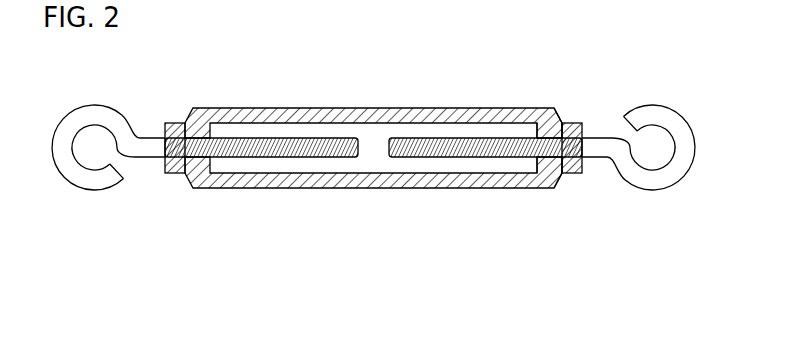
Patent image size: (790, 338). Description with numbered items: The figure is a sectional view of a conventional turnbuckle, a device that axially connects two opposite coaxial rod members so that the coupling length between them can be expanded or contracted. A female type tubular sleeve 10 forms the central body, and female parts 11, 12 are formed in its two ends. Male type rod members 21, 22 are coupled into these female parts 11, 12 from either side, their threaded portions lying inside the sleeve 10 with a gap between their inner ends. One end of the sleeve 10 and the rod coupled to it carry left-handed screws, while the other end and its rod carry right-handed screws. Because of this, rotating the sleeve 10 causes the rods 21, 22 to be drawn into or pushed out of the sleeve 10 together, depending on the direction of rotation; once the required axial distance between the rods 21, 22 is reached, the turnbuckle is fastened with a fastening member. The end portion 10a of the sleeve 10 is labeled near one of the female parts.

The female type tubular sleeve 10 is at (342, 107).
The end portion of body 10a is at (563, 180).
The female part 11 is at (183, 130).
The female part 12 is at (565, 123).
The male type rod member 21 is at (277, 140).
The male type rod member 22 is at (470, 138).